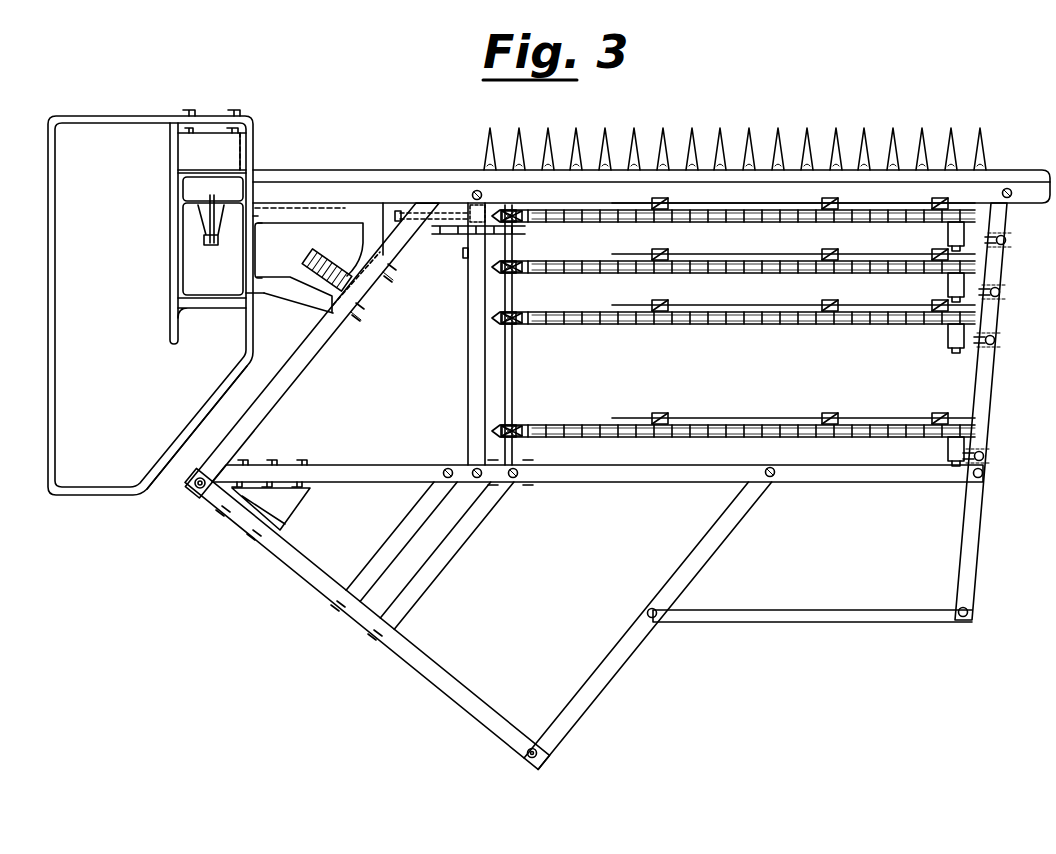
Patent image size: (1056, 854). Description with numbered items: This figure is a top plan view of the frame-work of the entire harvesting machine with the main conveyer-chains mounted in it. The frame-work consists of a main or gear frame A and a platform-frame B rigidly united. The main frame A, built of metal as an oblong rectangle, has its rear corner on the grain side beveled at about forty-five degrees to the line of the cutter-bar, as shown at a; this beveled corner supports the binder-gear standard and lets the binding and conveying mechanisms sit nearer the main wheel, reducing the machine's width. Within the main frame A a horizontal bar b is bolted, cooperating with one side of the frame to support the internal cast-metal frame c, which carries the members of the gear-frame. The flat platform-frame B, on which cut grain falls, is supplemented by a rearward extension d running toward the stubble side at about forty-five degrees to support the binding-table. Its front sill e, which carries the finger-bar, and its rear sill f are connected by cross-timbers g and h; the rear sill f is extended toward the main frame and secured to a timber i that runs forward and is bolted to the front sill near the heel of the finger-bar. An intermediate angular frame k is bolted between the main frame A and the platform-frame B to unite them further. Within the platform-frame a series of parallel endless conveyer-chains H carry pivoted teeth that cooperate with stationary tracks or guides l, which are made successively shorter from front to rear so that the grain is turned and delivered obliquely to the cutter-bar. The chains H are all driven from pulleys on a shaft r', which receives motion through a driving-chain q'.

The main or gear frame A is at (82, 288).
The beveled inner corner a is at (197, 427).
The horizontal bar b is at (170, 239).
The internal cast-metal frame c is at (594, 202).
The platform-frame B is at (607, 486).
The rearward extension d is at (367, 618).
The front sill e is at (651, 187).
The rear sill f is at (597, 492).
The cross-timber g is at (473, 334).
The cross-timber h is at (983, 411).
The timber i is at (219, 453).
The intermediate angular frame k is at (353, 221).
The stationary tracks or guides l is at (676, 212).
The endless conveyer-chains H is at (806, 242).
The driving-chain q' is at (460, 236).
The shaft r' is at (520, 335).